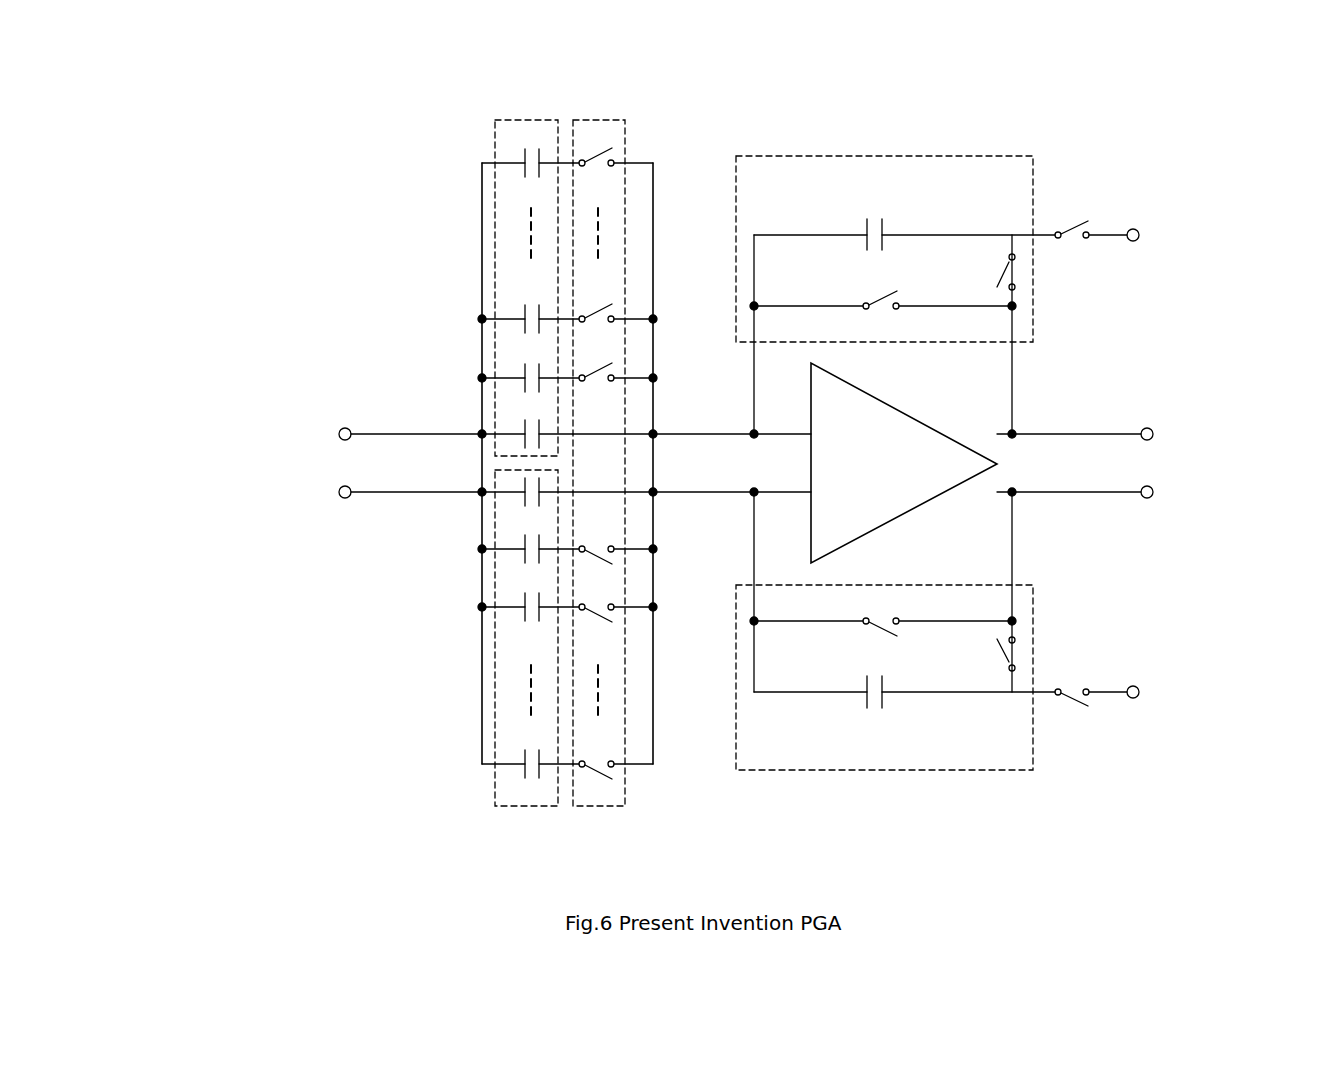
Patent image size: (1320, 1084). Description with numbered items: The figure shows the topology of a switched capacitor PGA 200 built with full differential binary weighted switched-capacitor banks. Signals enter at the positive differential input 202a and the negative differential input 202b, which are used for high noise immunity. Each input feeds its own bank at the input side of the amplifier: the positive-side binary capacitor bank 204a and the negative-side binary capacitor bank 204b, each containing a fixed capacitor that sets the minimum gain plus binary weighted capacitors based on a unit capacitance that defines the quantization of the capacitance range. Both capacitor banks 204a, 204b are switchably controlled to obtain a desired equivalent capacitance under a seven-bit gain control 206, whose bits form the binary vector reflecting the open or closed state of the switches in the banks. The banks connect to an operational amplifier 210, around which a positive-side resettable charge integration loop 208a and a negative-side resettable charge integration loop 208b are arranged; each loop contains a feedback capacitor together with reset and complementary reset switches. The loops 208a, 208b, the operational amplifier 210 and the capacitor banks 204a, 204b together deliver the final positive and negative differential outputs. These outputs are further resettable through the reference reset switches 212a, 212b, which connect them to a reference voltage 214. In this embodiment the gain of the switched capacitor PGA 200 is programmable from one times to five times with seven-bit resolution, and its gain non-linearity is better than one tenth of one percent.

The switched capacitor PGA 200 is at (245, 160).
The differential input V(IN+) 202a is at (266, 405).
The differential input V(IN−) 202b is at (266, 522).
The +side binary capacitor bank 204a is at (493, 133).
The −side binary capacitor bank 204b is at (493, 800).
The 7-bit gain control 206 is at (625, 797).
The +side resettable charge integration loop 208a is at (823, 156).
The −side resettable charge integration loop 208b is at (862, 770).
The operational amplifier 210 is at (876, 421).
The reference reset switch 212a is at (1073, 183).
The reference reset switch 212b is at (1074, 740).
The reference voltage VREF 214 is at (1195, 215).